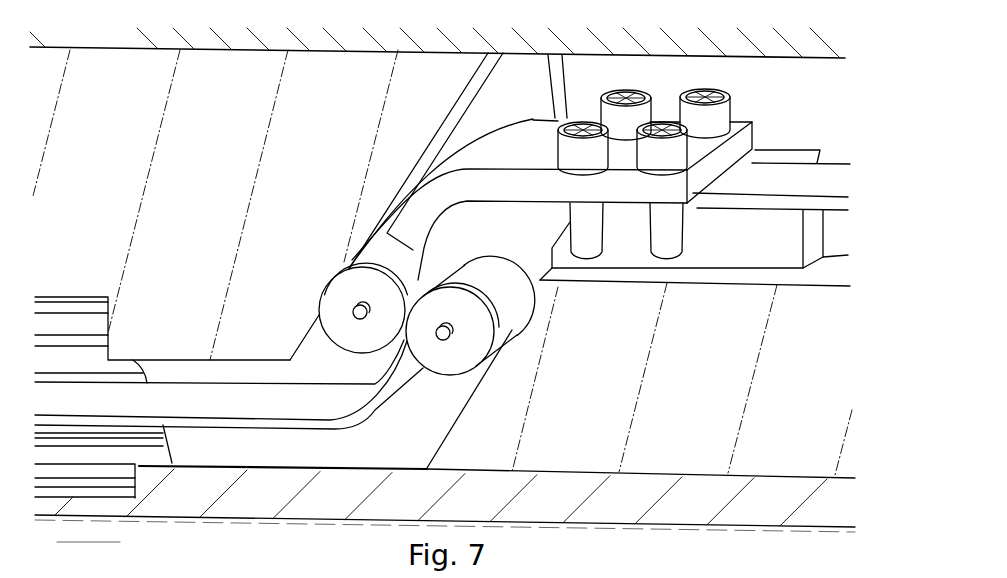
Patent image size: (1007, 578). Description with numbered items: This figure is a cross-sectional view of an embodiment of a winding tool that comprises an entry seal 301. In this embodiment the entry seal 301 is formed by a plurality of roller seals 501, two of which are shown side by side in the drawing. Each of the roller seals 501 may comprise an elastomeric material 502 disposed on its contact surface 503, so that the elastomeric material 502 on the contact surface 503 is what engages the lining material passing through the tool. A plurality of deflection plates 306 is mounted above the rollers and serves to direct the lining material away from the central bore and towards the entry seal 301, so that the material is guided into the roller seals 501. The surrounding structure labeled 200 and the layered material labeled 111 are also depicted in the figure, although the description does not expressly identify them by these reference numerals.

The frame body 200 is at (162, 68).
The entry seal 301 is at (347, 247).
The elastomeric material 502 is at (445, 277).
The deflection plates 306 is at (533, 138).
The sheet strip 111 is at (210, 405).
The contact surface 503 is at (501, 297).
The roller seals 501 is at (452, 383).